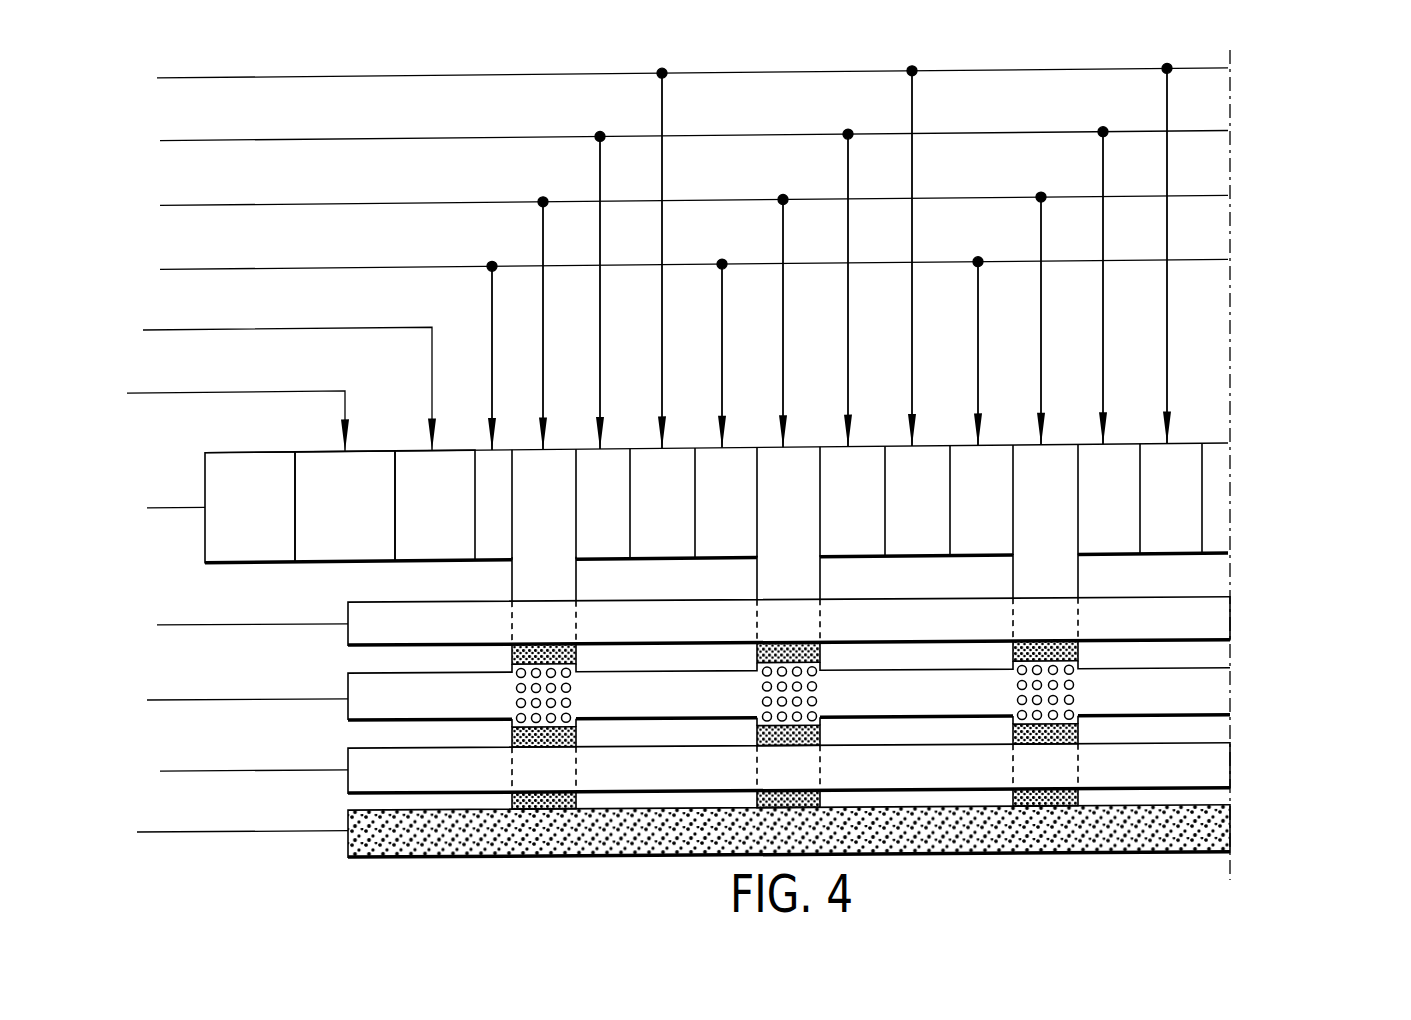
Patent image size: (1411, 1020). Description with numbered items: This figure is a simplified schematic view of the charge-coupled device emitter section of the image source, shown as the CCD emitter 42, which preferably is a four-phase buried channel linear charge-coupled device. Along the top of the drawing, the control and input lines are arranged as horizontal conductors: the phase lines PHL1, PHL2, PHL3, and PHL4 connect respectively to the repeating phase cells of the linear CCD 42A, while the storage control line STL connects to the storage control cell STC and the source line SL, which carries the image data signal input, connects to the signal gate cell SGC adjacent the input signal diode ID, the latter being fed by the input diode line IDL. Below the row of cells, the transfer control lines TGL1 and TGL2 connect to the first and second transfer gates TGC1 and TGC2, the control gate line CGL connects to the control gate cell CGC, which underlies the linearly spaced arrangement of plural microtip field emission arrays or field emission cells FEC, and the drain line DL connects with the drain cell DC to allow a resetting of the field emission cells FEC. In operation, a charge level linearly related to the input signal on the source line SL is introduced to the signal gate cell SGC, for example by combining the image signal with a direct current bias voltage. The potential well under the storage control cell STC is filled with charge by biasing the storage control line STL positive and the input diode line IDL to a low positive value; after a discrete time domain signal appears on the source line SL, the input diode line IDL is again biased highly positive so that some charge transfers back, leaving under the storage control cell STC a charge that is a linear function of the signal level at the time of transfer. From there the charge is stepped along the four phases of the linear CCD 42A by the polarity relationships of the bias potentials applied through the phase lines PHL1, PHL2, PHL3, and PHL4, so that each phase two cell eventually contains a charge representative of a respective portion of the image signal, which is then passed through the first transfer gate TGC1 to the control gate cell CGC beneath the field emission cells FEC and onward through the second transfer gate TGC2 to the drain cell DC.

The CCD emitter 42 is at (746, 469).
The linear CCD 42A is at (761, 501).
The field emission cells FEC is at (765, 700).
The input signal diode ID is at (250, 507).
The signal gate cell SGC is at (345, 506).
The storage control cell STC is at (435, 505).
The first transfer gate TGC1 is at (789, 621).
The control gate cell CGC is at (789, 694).
The second transfer gate TGC2 is at (789, 768).
The drain cell DC is at (789, 831).
The phase line PHL1 is at (655, 265).
The phase line PHL2 is at (655, 201).
The phase line PHL3 is at (655, 137).
The phase line PHL4 is at (655, 73).
The storage control line STL is at (262, 386).
The source line SL is at (218, 418).
The input diode line IDL is at (148, 510).
The transfer control line TGL1 is at (220, 628).
The control gate line CGL is at (220, 703).
The transfer control line TGL2 is at (220, 774).
The drain line DL is at (220, 838).